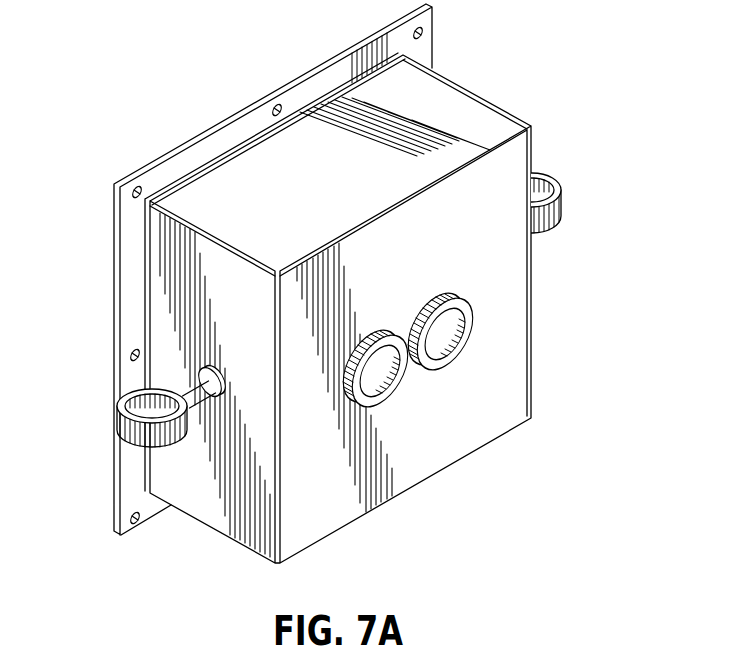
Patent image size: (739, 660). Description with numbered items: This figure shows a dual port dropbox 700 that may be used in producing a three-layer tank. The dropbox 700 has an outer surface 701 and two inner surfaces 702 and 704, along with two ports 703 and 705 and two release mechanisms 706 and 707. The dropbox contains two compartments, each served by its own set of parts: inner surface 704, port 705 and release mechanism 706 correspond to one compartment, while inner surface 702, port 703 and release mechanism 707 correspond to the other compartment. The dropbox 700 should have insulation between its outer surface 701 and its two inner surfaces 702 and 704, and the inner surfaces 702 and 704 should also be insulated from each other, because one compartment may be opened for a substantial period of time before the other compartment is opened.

The dual port dropbox 700 is at (171, 69).
The outer surface 701 is at (513, 305).
The inner surface 702 is at (453, 332).
The port 703 is at (505, 353).
The inner surface 704 is at (393, 377).
The port 705 is at (458, 408).
The release mechanism 706 is at (140, 432).
The release mechanism 707 is at (560, 200).